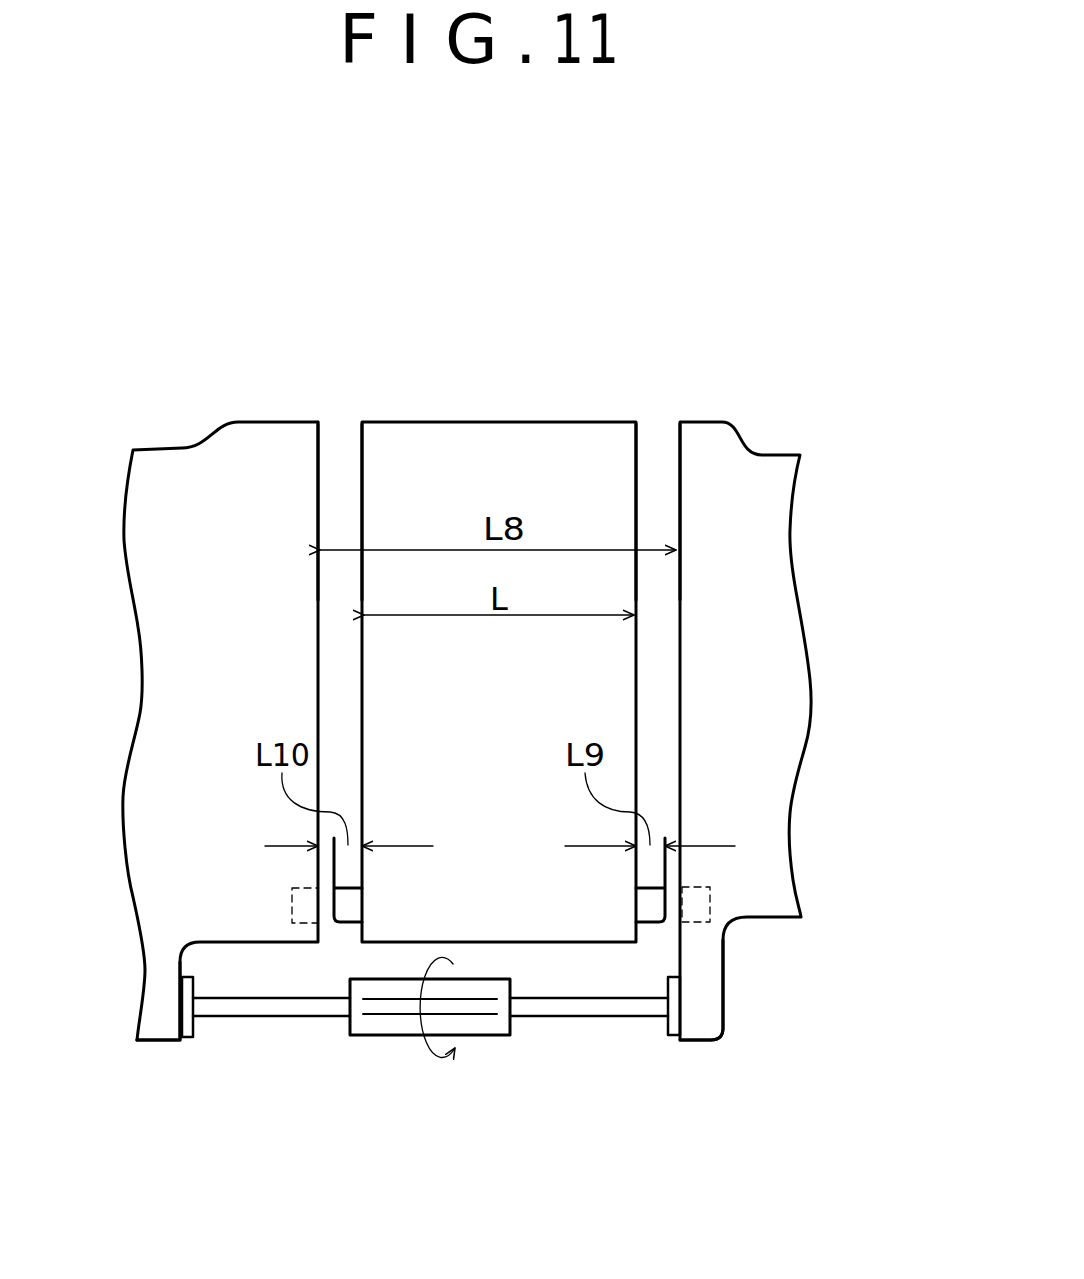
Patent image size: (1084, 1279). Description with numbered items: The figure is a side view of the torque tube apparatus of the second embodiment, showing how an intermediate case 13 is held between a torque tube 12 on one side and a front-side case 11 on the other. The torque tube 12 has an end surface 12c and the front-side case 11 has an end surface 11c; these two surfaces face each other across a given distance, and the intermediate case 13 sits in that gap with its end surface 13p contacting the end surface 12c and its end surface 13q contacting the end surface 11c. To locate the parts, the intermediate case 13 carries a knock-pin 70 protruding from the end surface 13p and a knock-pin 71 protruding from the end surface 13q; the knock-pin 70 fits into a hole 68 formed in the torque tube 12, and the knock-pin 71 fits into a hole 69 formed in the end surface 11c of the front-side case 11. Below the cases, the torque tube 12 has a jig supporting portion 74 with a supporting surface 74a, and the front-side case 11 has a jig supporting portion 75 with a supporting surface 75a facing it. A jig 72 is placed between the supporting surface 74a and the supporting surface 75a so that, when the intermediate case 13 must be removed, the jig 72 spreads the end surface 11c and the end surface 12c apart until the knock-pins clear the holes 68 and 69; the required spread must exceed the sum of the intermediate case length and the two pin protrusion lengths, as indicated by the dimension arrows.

The front-side case 11 is at (233, 490).
The end surface 11c is at (318, 437).
The torque tube 12 is at (747, 485).
The end surface 12c is at (678, 437).
The intermediate case 13 is at (505, 440).
The end surface 13p is at (636, 437).
The end surface 13q is at (362, 437).
The hole 68 is at (710, 912).
The hole 69 is at (301, 890).
The knock-pin 70 is at (650, 910).
The knock-pin 71 is at (348, 910).
The jig 72 is at (487, 1023).
The jig supporting portion 74 is at (708, 1052).
The supporting surface 74a is at (680, 966).
The jig supporting portion 75 is at (153, 1052).
The supporting surface 75a is at (193, 1020).